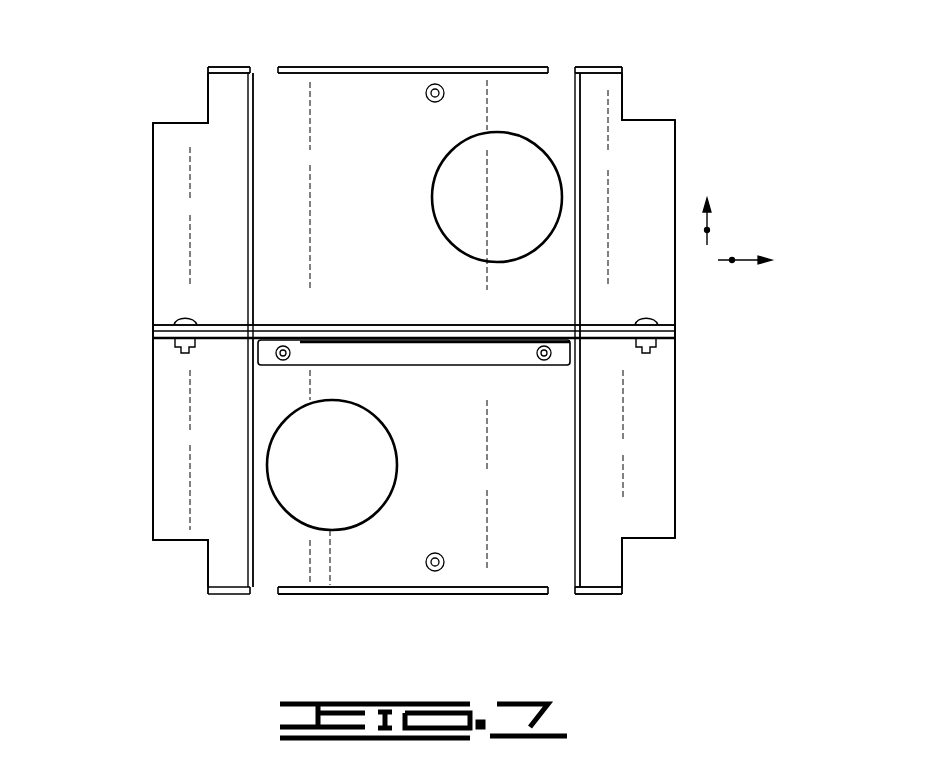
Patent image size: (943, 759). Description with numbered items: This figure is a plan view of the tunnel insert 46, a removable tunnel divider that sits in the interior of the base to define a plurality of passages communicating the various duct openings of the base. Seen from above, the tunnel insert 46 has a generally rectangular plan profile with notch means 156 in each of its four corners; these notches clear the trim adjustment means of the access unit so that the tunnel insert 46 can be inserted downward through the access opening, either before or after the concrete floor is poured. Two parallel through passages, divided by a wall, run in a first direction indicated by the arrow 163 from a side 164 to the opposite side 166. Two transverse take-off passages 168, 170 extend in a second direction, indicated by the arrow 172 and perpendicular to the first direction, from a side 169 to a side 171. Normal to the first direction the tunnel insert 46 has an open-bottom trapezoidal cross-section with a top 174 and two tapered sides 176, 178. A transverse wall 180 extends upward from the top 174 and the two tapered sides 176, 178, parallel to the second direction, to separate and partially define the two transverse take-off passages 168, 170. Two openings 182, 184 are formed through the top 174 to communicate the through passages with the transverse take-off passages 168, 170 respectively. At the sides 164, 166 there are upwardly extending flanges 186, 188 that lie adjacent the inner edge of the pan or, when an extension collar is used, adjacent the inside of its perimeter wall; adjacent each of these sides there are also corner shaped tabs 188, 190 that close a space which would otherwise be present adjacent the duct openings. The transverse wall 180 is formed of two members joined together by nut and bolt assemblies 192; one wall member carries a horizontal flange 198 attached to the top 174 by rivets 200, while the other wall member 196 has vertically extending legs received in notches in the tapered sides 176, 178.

The tunnel insert 46 is at (672, 68).
The notch means 156 is at (208, 83).
The arrow (first direction) 163 is at (708, 230).
The side 164 is at (484, 594).
The side 166 is at (460, 67).
The transverse take-off passage 168 is at (300, 552).
The side 169 is at (676, 174).
The transverse take-off passage 170 is at (285, 95).
The side 171 is at (152, 260).
The arrow (second direction) 172 is at (732, 258).
The top 174 is at (556, 286).
The tapered side 176 is at (170, 188).
The tapered side 178 is at (657, 152).
The transverse wall 180 is at (602, 335).
The opening 182 is at (353, 415).
The opening 184 is at (441, 194).
The flange 186 is at (396, 594).
The flange 188 is at (225, 70).
The corner shaped tab 190 is at (600, 67).
The nut and bolt assembly 192 is at (176, 322).
The wall member 196 is at (497, 325).
The horizontal flange 198 is at (445, 355).
The rivets 200 is at (280, 357).